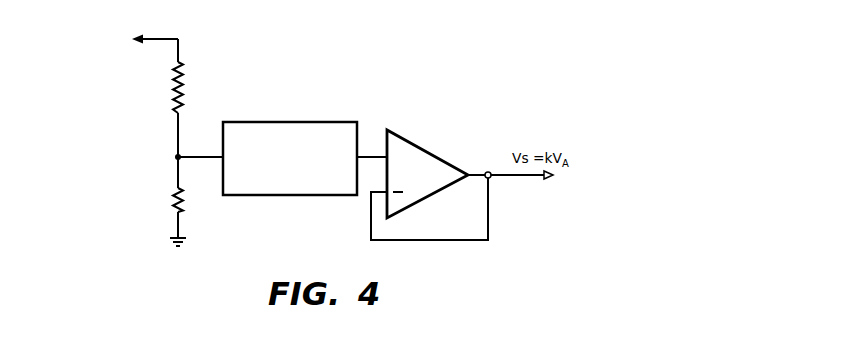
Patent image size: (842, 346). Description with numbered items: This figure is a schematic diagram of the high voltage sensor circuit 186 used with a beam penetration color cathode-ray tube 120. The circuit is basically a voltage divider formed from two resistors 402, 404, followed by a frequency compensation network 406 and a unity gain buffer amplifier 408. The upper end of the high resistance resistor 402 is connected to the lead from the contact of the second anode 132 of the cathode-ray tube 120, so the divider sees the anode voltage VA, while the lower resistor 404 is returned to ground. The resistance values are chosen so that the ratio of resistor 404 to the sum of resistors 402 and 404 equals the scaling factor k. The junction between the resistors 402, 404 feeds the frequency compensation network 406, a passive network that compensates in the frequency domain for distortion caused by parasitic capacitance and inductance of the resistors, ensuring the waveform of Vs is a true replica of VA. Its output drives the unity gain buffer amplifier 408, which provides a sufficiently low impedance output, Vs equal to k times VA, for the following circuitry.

The second anode 132 is at (98, 42).
The beam penetration color cathode-ray tube 120 is at (70, 76).
The high voltage sensor circuit 186 is at (60, 146).
The resistor 402 is at (182, 88).
The resistor 404 is at (181, 203).
The frequency compensation network 406 is at (298, 122).
The unity gain buffer amplifier 408 is at (412, 143).